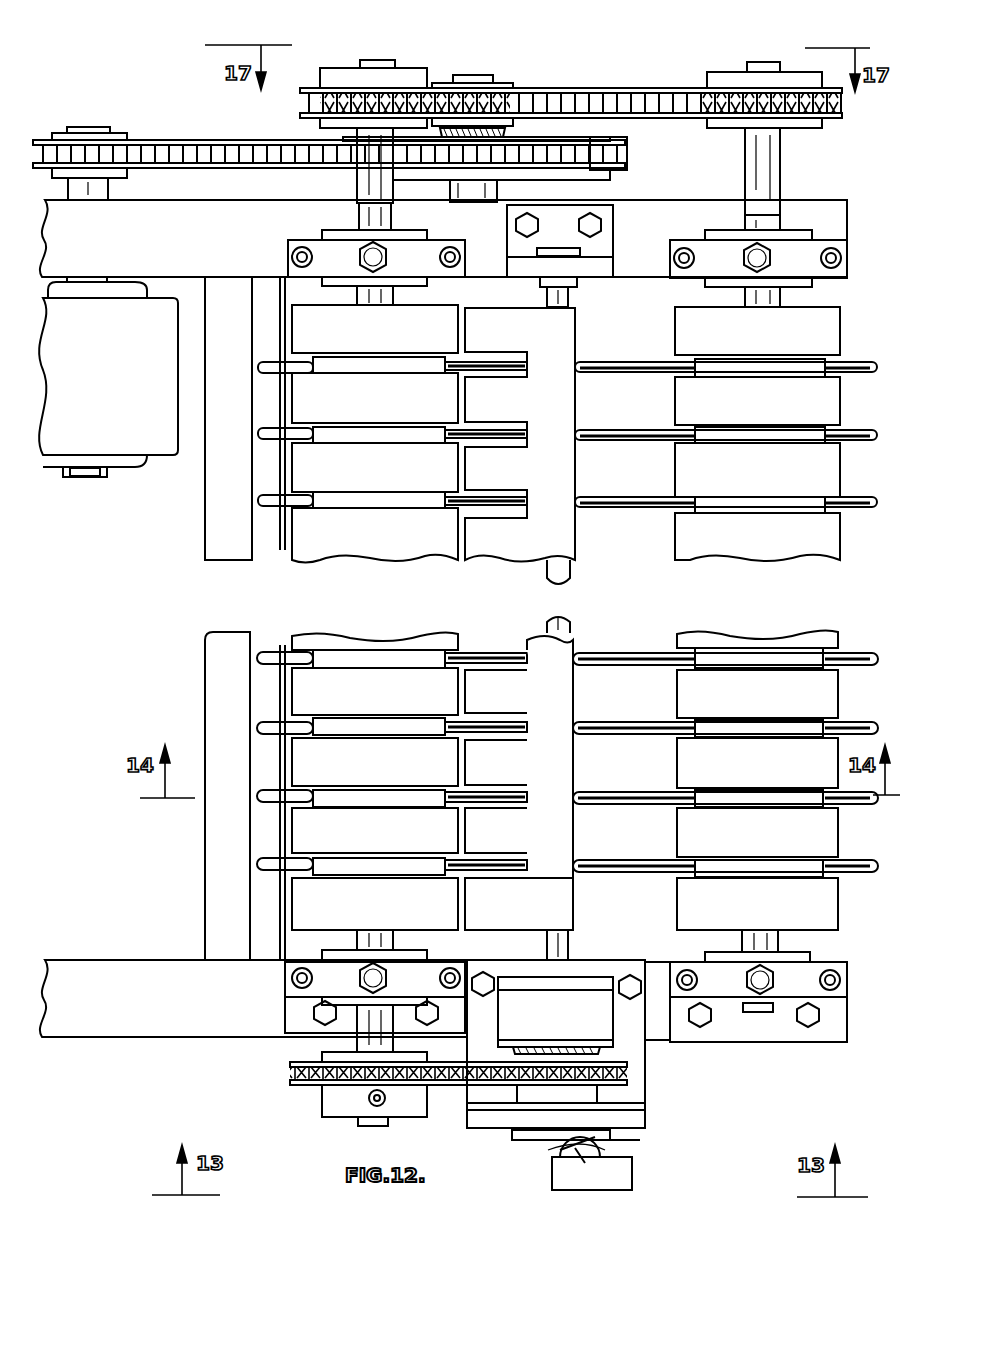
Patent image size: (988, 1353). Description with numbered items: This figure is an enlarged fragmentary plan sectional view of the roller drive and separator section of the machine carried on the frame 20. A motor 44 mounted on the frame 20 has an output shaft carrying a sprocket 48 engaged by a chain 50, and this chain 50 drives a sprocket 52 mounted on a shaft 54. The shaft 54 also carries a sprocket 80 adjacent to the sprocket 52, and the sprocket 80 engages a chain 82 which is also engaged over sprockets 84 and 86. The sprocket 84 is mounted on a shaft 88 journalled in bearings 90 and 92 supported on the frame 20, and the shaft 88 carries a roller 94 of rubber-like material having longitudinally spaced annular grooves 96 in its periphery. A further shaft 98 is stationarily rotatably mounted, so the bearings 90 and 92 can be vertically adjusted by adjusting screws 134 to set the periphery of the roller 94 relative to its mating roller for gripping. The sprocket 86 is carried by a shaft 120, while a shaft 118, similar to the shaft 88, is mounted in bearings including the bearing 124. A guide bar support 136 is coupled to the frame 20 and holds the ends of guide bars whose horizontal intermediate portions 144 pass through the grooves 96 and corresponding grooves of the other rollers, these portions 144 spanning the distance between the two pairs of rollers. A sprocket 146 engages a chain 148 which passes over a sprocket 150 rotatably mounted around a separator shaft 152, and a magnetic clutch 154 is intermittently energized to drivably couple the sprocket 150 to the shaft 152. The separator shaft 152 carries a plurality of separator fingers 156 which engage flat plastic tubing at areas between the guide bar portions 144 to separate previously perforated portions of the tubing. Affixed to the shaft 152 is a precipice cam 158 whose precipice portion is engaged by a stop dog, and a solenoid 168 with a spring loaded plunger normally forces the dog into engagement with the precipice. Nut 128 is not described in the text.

The frame 20 is at (122, 248).
The motor 44 is at (148, 362).
The sprocket 48 is at (113, 133).
The chain 50 is at (180, 145).
The sprocket 52 is at (600, 182).
The shaft 54 is at (468, 196).
The sprocket 80 is at (510, 90).
The chain 82 is at (600, 92).
The sprocket 84 is at (345, 90).
The sprocket 86 is at (712, 80).
The shaft 88 is at (358, 210).
The bearing 90 is at (302, 242).
The bearing 92 is at (302, 970).
The roller 94 is at (318, 470).
The annular grooves 96 is at (300, 378).
The shaft 98 is at (357, 178).
The shaft 118 is at (770, 210).
The shaft 120 is at (768, 162).
The bearing 124 is at (810, 958).
The bearing nut 128 is at (765, 265).
The adjusting screws 134 is at (378, 268).
The guide bar support 136 is at (245, 635).
The intermediate portion 144 is at (650, 435).
The sprocket 146 is at (828, 400).
The chain 148 is at (445, 1086).
The sprocket 150 is at (645, 1110).
The separator shaft 152 is at (568, 935).
The magnetic clutch 154 is at (600, 1015).
The separator fingers 156 is at (520, 470).
The precipice cam 158 is at (580, 1143).
The solenoid 168 is at (633, 1158).